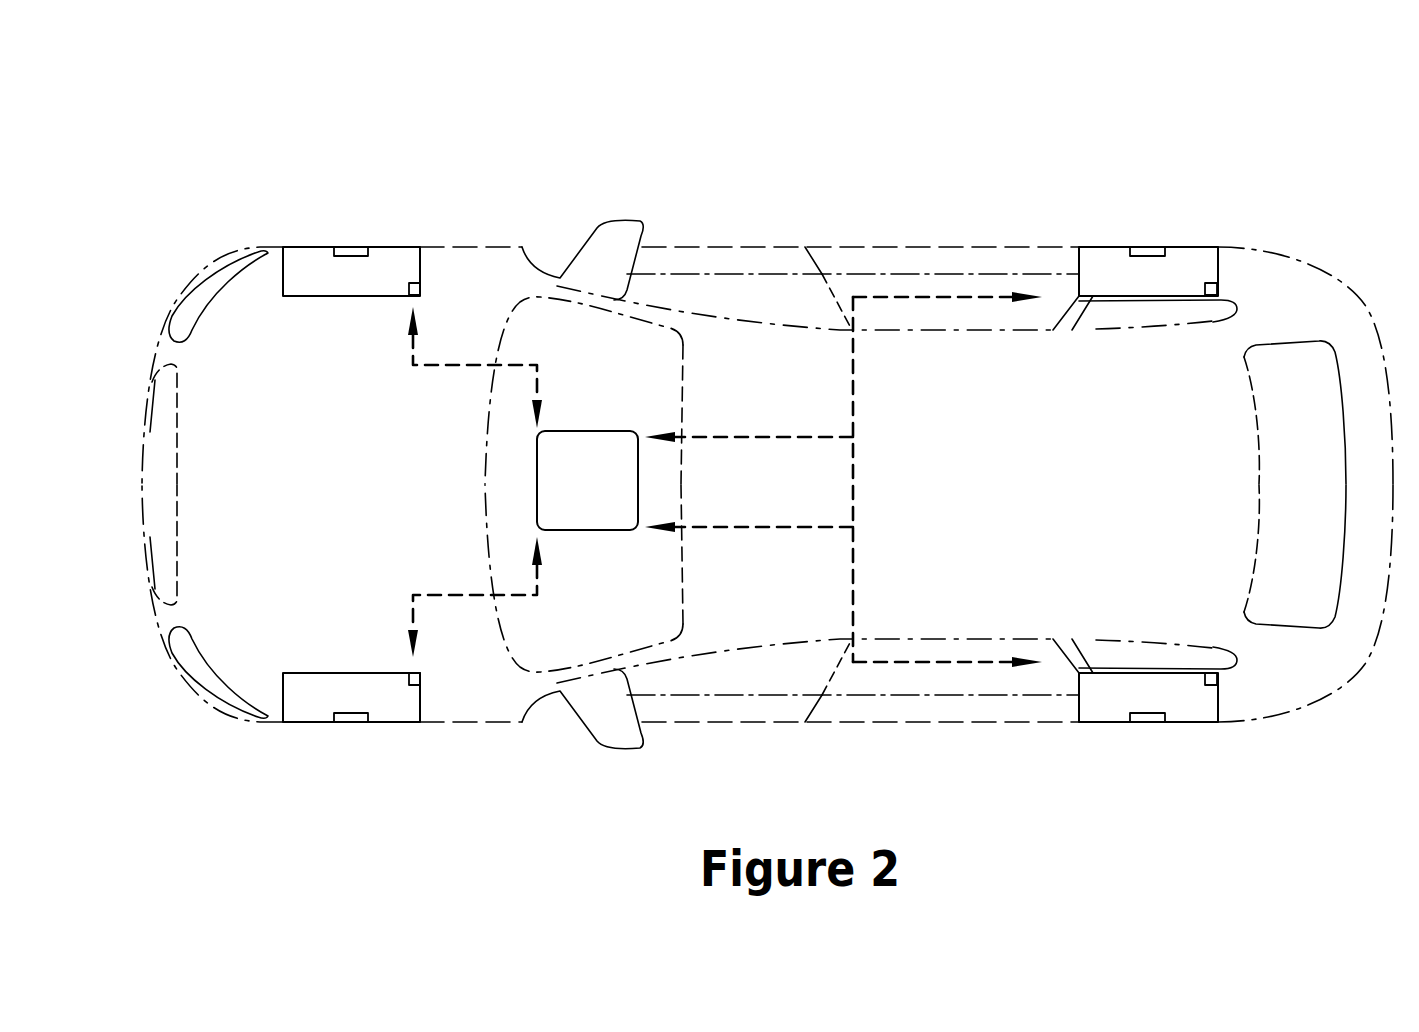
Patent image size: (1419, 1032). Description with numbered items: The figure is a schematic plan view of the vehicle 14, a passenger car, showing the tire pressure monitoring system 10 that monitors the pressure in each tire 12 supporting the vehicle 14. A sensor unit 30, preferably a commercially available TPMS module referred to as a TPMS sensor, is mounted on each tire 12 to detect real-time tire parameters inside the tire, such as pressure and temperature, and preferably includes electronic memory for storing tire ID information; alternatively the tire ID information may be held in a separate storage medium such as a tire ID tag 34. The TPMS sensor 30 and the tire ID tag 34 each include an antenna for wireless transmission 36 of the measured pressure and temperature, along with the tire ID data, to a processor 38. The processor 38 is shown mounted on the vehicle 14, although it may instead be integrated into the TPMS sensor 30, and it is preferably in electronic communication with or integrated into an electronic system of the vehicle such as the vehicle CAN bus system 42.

The tire pressure monitoring system 10 is at (735, 449).
The tire 12 is at (412, 232).
The vehicle 14 is at (964, 232).
The sensor unit 30 is at (416, 286).
The tire ID tag 34 is at (355, 247).
The wireless transmission 36 is at (540, 377).
The processor 38 is at (521, 483).
The vehicle CAN bus system 42 is at (617, 653).